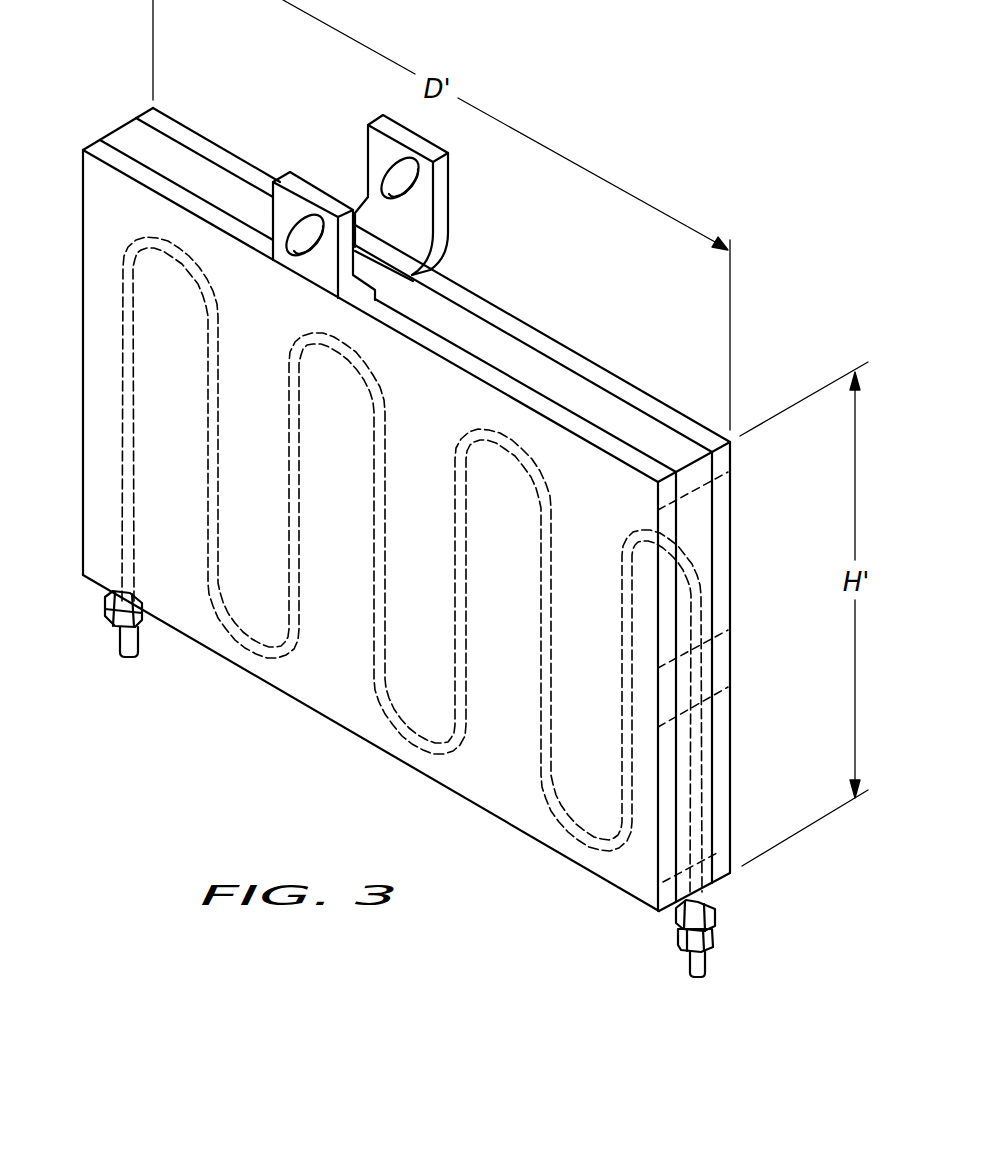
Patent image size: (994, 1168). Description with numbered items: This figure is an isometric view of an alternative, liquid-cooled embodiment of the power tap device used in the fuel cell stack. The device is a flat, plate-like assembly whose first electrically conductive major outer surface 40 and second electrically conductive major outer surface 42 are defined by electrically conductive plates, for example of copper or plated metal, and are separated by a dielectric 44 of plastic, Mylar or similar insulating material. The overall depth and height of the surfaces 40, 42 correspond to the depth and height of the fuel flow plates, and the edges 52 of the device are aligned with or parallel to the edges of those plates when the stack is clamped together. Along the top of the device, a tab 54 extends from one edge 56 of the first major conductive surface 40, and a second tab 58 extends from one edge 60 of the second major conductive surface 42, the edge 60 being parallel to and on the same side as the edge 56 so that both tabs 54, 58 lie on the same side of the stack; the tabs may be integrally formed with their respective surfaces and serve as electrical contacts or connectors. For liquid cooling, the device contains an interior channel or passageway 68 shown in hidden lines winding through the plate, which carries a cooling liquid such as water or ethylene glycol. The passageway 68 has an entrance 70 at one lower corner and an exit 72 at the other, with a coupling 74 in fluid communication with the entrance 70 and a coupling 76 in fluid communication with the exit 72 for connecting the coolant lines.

The first electrically conductive major outer surface 40 is at (102, 162).
The second electrically conductive major outer surface 42 is at (186, 127).
The dielectric 44 is at (122, 127).
The edges 52 is at (633, 400).
The tab 54 is at (277, 182).
The edge of the first major conductive surface 56 is at (152, 178).
The tab 58 is at (452, 190).
The edge of the second major conductive surface 60 is at (547, 343).
The interior passageway 68 is at (219, 446).
The entrance 70 is at (107, 608).
The exit 72 is at (702, 897).
The coupling 74 is at (121, 630).
The coupling 76 is at (708, 949).